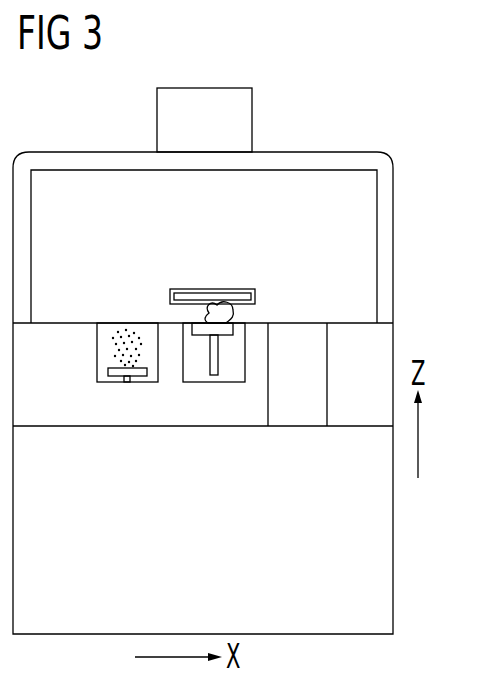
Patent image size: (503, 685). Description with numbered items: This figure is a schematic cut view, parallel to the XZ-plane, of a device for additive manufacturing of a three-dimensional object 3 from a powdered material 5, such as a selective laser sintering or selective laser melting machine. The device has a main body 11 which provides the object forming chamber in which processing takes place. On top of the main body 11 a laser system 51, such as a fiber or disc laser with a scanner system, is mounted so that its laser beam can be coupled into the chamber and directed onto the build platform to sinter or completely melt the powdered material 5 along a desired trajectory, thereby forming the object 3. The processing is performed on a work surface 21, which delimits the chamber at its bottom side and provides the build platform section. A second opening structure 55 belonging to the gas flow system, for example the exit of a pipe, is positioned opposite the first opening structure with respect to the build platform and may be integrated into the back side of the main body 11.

The main body 11 is at (393, 205).
The laser system 51 is at (252, 115).
The work surface 21 is at (72, 322).
The powdered material 5 is at (116, 290).
The second opening structure 55 is at (255, 293).
The three-dimensional object 3 is at (236, 310).